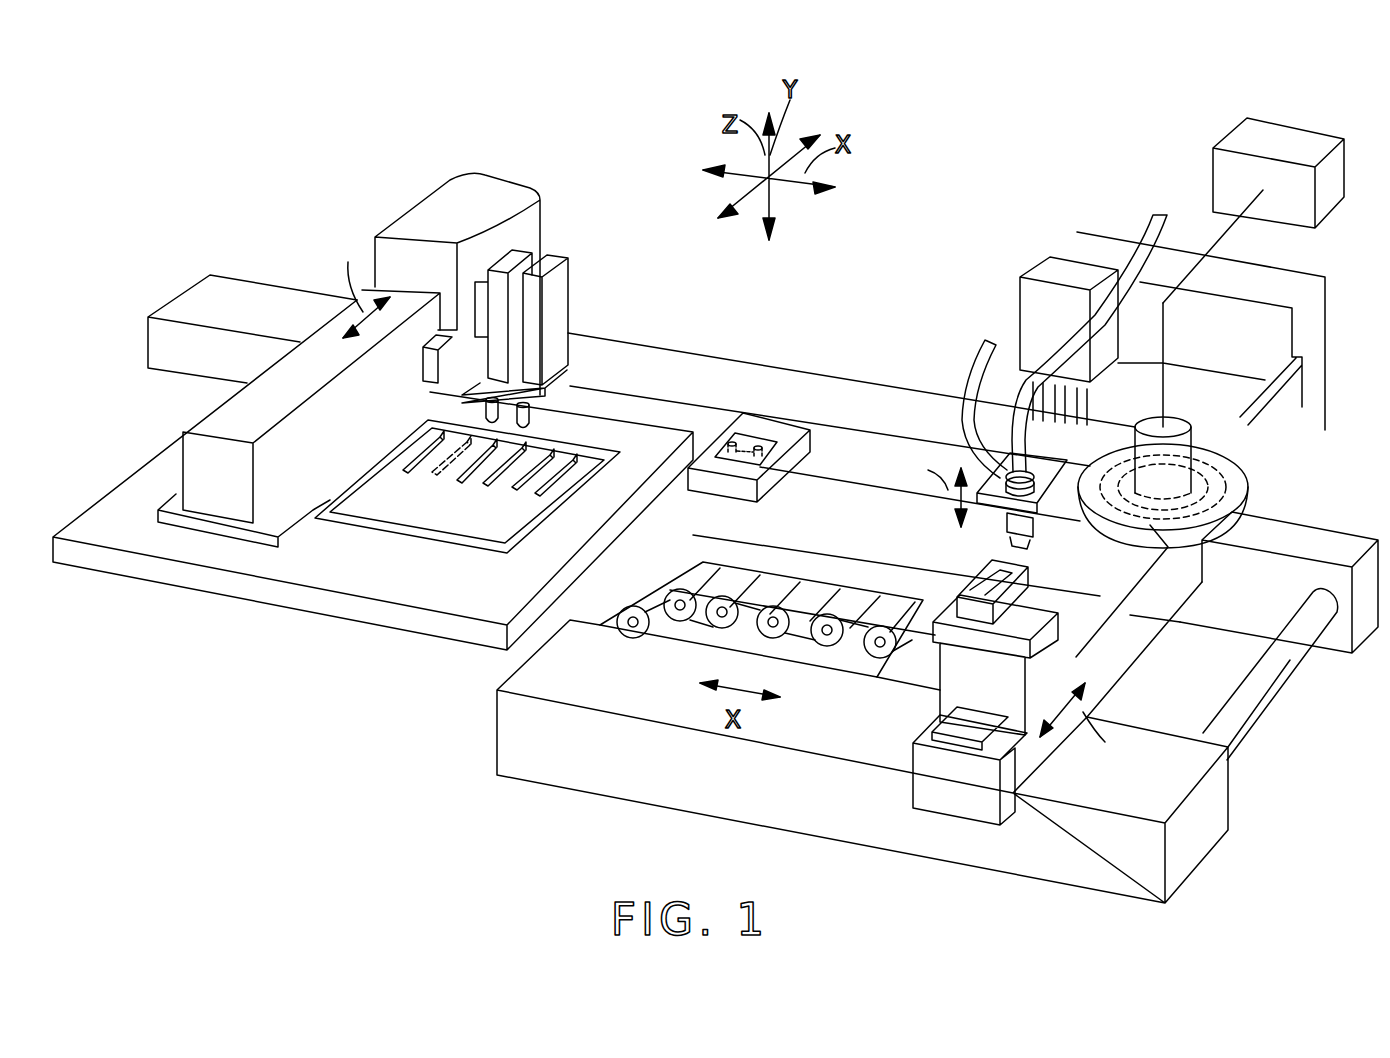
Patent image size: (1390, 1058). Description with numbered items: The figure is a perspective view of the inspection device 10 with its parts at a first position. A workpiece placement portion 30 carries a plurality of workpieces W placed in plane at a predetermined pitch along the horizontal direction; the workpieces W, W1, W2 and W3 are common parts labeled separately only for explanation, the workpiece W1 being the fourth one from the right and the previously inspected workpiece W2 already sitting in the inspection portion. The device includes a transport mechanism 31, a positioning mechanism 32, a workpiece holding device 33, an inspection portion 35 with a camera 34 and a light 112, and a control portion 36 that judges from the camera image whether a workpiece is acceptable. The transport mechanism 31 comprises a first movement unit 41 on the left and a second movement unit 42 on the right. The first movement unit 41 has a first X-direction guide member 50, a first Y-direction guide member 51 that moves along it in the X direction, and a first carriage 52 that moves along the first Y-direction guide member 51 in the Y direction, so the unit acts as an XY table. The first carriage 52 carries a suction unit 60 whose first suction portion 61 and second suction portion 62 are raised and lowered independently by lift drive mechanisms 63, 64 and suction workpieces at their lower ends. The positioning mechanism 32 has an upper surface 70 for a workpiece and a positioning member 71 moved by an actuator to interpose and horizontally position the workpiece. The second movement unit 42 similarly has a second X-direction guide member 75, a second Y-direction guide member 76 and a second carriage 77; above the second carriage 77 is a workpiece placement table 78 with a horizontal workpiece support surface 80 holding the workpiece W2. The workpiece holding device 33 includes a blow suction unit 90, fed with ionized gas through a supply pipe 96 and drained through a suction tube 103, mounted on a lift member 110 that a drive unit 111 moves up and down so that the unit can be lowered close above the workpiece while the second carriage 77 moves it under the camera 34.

The inspection device 10 is at (938, 140).
The workpiece placement portion 30 is at (472, 514).
The transport mechanism 31 is at (410, 178).
The positioning mechanism 32 is at (762, 427).
The workpiece holding device 33 is at (1085, 587).
The camera 34 is at (1198, 510).
The inspection portion 35 is at (1242, 533).
The control portion 36 is at (1280, 136).
The first movement unit 41 is at (230, 555).
The second movement unit 42 is at (970, 826).
The first X-direction guide member 50 is at (820, 385).
The first Y-direction guide member 51 is at (322, 338).
The first carriage 52 is at (483, 184).
The suction unit 60 is at (515, 288).
The first suction portion 61 is at (460, 395).
The second suction portion 62 is at (560, 417).
The lift drive mechanism 63 is at (510, 255).
The lift drive mechanism 64 is at (560, 285).
The upper surface 70 is at (749, 452).
The positioning member 71 is at (735, 438).
The second X-direction guide member 75 is at (683, 783).
The second Y-direction guide member 76 is at (1180, 607).
The second carriage 77 is at (1189, 642).
The workpiece placement table 78 is at (938, 618).
The workpiece support surface 80 is at (1038, 640).
The blow suction unit 90 is at (1035, 371).
The supply pipe 96 is at (1140, 257).
The suction tube 103 is at (983, 378).
The lift member 110 is at (1057, 500).
The drive unit 111 is at (1020, 300).
The light 112 is at (1234, 506).
The workpiece W is at (410, 467).
The workpiece W1 is at (455, 455).
The workpiece W2 is at (1010, 577).
The workpiece W3 is at (500, 470).